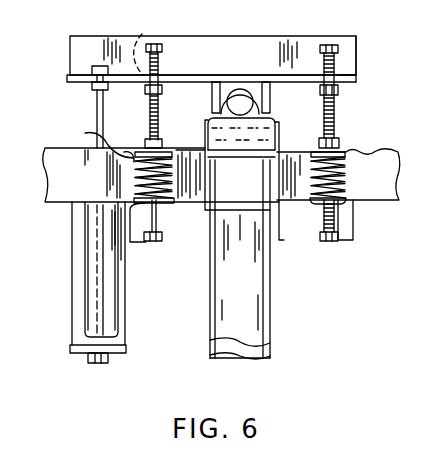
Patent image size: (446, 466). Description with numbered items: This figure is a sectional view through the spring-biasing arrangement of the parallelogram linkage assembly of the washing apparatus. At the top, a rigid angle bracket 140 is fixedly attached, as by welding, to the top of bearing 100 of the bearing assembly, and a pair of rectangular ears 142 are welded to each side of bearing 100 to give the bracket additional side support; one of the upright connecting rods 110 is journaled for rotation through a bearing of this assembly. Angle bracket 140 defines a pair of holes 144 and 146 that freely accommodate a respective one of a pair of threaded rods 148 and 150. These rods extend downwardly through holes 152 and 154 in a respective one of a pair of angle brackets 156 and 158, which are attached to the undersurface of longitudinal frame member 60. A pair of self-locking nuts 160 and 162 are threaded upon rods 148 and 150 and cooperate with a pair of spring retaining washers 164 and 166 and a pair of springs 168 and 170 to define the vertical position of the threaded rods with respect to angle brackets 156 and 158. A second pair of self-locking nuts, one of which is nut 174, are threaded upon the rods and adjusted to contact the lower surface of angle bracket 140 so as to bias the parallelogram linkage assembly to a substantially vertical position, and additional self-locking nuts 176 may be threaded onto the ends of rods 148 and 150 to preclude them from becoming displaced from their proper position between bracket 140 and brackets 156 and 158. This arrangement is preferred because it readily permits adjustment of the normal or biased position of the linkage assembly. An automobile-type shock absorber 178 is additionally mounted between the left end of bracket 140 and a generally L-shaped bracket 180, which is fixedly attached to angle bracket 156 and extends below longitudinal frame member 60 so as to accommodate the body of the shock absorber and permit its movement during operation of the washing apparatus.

The longitudinal horizontal frame member 60 is at (78, 182).
The bearing 100 is at (235, 84).
The upright connecting rod 110 is at (250, 292).
The rigid angle bracket 140 is at (240, 36).
The rectangular ears 142 is at (211, 96).
The hole 144 is at (143, 36).
The hole 146 is at (352, 70).
The threaded rod 148 is at (149, 106).
The threaded rod 150 is at (336, 118).
The hole 152 is at (158, 206).
The hole 154 is at (318, 206).
The angle bracket 156 is at (175, 204).
The angle bracket 158 is at (354, 224).
The self-locking nut 160 is at (150, 140).
The self-locking nut 162 is at (340, 143).
The spring retaining washer 164 is at (86, 133).
The spring retaining washer 166 is at (396, 156).
The spring 168 is at (182, 150).
The spring 170 is at (346, 176).
The self-locking nut 174 is at (339, 91).
The self-locking nut 176 is at (155, 36).
The shock absorber 178 is at (84, 222).
The L-shaped bracket 180 is at (72, 290).